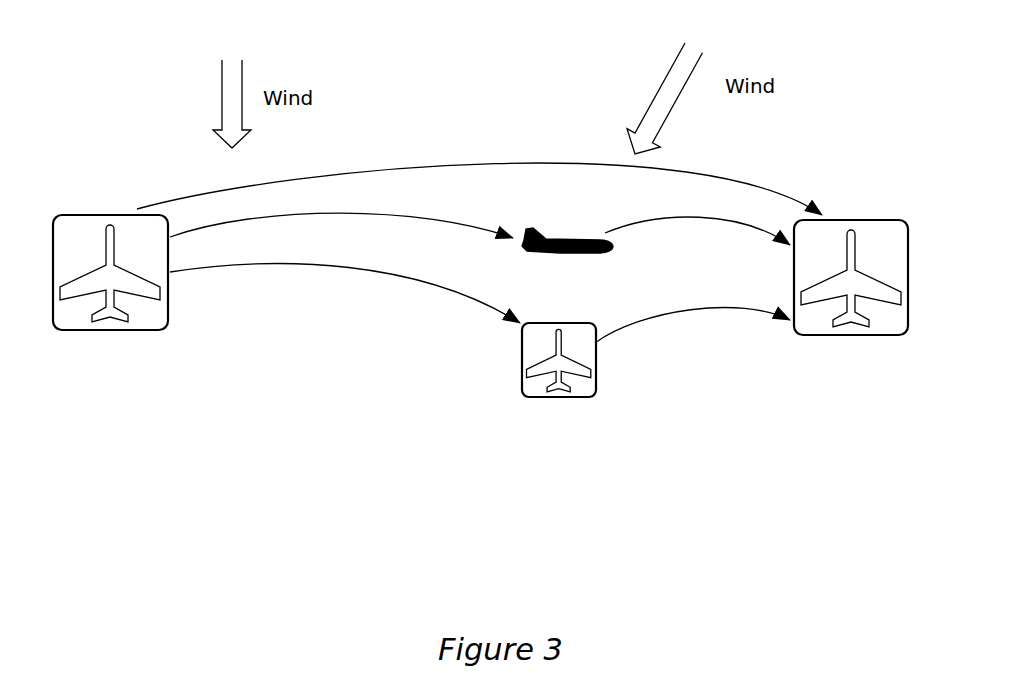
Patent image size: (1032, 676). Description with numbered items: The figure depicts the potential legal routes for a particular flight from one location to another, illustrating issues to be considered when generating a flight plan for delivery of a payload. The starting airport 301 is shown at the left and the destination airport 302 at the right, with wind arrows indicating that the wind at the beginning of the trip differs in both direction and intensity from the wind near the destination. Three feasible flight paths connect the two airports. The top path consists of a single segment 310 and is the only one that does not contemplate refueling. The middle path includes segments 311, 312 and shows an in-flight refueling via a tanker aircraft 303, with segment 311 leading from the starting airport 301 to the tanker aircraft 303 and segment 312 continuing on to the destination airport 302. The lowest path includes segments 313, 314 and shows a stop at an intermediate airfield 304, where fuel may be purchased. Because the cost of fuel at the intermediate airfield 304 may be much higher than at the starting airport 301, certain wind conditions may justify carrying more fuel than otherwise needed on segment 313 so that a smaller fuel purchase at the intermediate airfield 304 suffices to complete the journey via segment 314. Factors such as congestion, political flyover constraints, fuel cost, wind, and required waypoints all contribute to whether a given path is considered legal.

The starting airport 301 is at (110, 288).
The destination airport 302 is at (851, 293).
The tanker aircraft 303 is at (567, 255).
The intermediate airfield 304 is at (559, 375).
The segment 310 is at (479, 183).
The segment 311 is at (341, 218).
The segment 312 is at (697, 225).
The segment 313 is at (345, 289).
The segment 314 is at (692, 319).